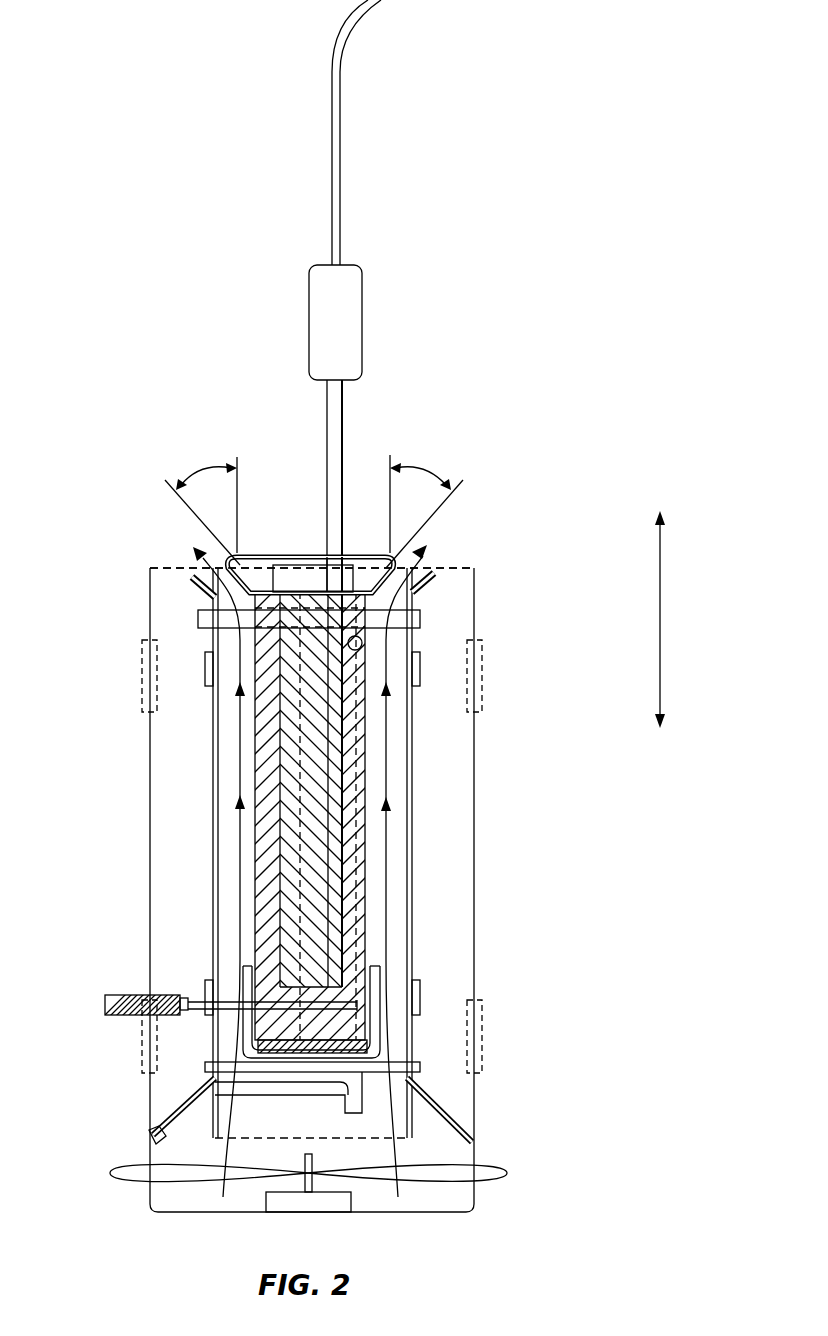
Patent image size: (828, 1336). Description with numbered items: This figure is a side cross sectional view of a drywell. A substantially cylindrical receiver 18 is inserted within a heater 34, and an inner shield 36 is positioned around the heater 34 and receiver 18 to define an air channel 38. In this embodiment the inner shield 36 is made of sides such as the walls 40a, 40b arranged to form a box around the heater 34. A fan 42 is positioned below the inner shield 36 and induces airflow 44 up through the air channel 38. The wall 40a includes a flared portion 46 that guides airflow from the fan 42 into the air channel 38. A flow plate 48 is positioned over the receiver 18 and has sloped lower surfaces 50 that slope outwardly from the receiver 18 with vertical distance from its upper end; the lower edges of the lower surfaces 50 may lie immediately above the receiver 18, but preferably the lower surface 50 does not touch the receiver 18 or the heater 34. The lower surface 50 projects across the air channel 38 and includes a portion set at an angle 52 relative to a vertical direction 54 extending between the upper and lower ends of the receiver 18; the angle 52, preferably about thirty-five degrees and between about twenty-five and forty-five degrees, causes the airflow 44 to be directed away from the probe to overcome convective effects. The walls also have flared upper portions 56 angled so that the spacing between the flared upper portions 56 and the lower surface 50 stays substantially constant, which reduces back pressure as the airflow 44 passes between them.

The receiver 18 is at (296, 565).
The heater 34 is at (270, 785).
The inner shield 36 is at (197, 885).
The air channel 38 is at (225, 818).
The side 40a is at (213, 737).
The side 40b is at (412, 784).
The fan 42 is at (175, 1172).
The airflow 44 is at (237, 947).
The flared portions 46 is at (180, 1107).
The flow plate 48 is at (358, 546).
The sloped lower surface 50 is at (230, 593).
The angle 52 is at (314, 509).
The vertical direction 54 is at (660, 620).
The flared upper portions 56 is at (200, 585).